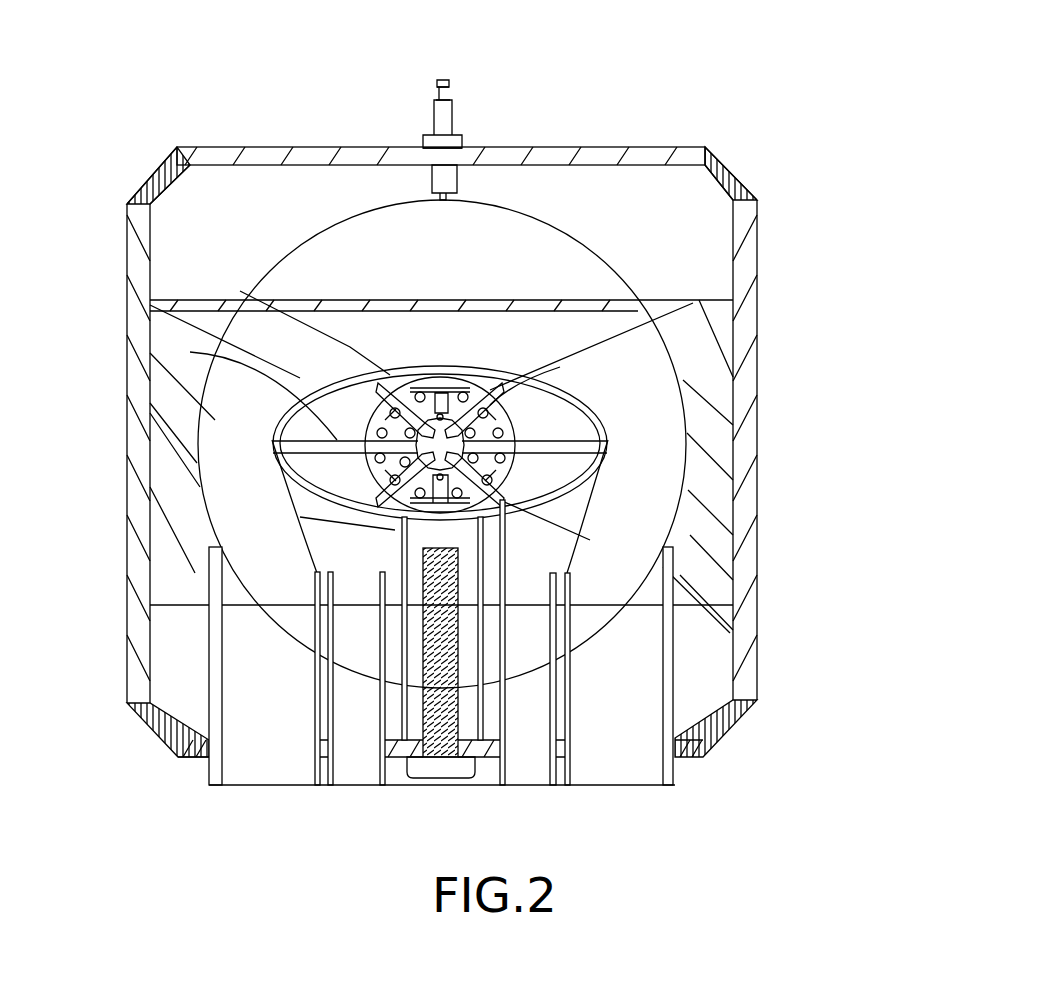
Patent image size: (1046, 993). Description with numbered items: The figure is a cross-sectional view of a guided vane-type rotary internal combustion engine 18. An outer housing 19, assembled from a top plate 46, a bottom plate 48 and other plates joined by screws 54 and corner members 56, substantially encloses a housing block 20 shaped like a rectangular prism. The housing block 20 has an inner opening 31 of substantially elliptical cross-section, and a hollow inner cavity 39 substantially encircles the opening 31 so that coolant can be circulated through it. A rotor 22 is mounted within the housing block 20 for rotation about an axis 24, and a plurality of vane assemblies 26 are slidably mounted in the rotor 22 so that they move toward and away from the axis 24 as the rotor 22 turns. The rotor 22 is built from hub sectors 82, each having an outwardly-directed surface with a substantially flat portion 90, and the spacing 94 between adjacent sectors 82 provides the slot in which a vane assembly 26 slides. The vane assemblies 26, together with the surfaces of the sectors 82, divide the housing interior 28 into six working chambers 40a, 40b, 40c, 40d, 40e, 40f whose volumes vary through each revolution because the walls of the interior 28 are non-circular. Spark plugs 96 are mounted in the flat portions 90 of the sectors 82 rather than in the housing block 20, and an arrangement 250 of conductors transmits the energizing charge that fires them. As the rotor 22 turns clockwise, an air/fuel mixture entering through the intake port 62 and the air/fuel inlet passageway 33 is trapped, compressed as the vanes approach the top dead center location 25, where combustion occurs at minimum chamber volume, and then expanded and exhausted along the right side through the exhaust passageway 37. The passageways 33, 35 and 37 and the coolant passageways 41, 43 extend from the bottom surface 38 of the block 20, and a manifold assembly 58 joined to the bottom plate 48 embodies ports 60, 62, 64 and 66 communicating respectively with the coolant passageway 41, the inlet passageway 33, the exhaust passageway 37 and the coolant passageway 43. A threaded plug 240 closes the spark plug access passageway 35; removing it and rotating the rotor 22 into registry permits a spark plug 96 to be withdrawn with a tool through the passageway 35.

The internal combustion engine 18 is at (104, 208).
The outer housing 19 is at (597, 147).
The housing block 20 is at (683, 300).
The rotor 22 is at (462, 447).
The axis 24 is at (510, 470).
The top dead center location 25 is at (430, 385).
The vane assemblies 26 is at (190, 352).
The housing interior 28 is at (335, 462).
The inner opening 31 is at (590, 470).
The air/fuel inlet passageway 33 is at (370, 597).
The spark plug access passageway 35 is at (455, 508).
The exhaust passageway 37 is at (536, 597).
The bottom surface 38 is at (690, 612).
The hollow inner cavity 39 is at (655, 527).
The working chamber 40a is at (350, 457).
The working chamber 40b is at (273, 432).
The working chamber 40c is at (435, 385).
The working chamber 40d is at (585, 404).
The working chamber 40e is at (607, 472).
The working chamber 40f is at (448, 498).
The coolant passageway 41 is at (291, 597).
The coolant passageway 43 is at (626, 576).
The top plate 46 is at (262, 147).
The bottom plate 48 is at (195, 765).
The screws 54 is at (187, 147).
The corner members 56 is at (165, 190).
The manifold assembly 58 is at (677, 768).
The port 60 is at (286, 764).
The port 62 is at (369, 764).
The port 64 is at (542, 756).
The port 66 is at (625, 756).
The hub sector 82 is at (300, 470).
The flat portion 90 is at (240, 297).
The spacing 94 is at (333, 452).
The spark plugs 96 is at (670, 335).
The threaded plug 240 is at (440, 787).
The arrangement of conductors 250 is at (466, 72).